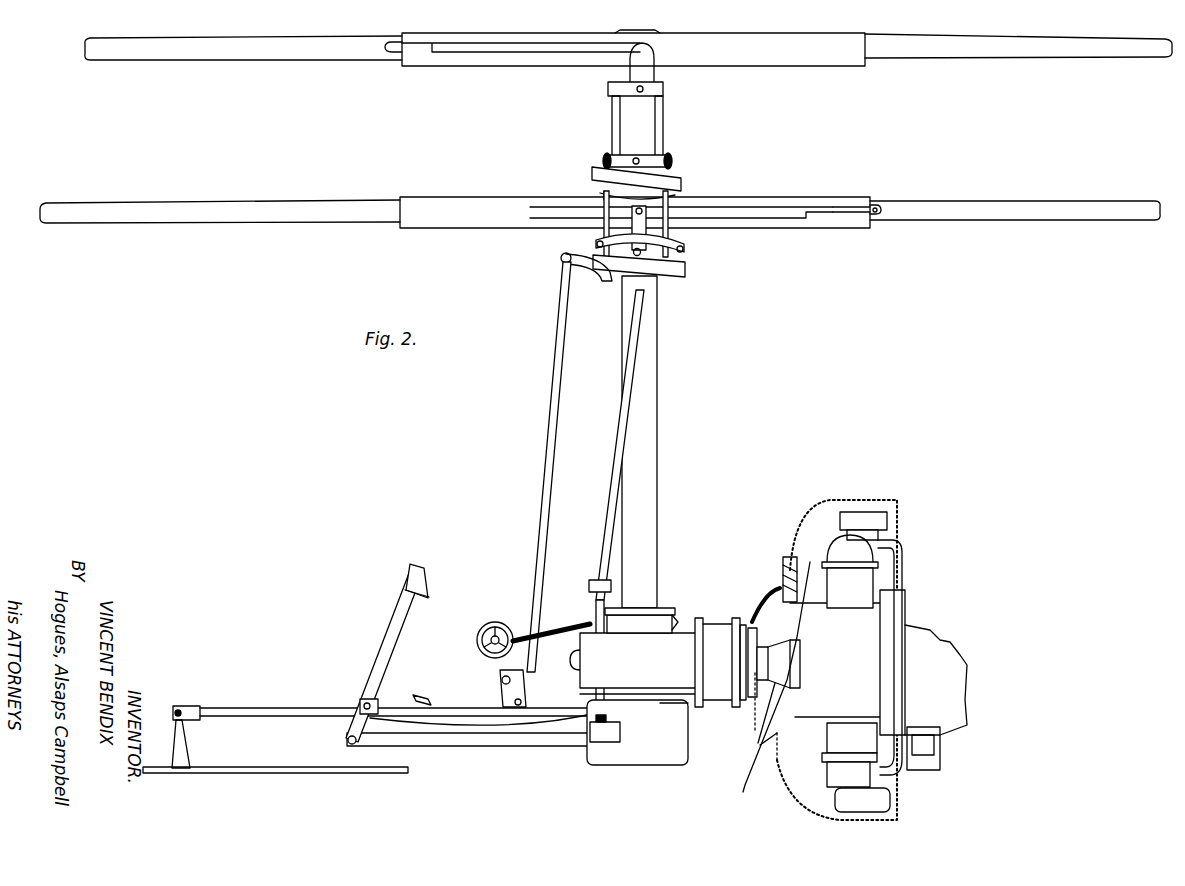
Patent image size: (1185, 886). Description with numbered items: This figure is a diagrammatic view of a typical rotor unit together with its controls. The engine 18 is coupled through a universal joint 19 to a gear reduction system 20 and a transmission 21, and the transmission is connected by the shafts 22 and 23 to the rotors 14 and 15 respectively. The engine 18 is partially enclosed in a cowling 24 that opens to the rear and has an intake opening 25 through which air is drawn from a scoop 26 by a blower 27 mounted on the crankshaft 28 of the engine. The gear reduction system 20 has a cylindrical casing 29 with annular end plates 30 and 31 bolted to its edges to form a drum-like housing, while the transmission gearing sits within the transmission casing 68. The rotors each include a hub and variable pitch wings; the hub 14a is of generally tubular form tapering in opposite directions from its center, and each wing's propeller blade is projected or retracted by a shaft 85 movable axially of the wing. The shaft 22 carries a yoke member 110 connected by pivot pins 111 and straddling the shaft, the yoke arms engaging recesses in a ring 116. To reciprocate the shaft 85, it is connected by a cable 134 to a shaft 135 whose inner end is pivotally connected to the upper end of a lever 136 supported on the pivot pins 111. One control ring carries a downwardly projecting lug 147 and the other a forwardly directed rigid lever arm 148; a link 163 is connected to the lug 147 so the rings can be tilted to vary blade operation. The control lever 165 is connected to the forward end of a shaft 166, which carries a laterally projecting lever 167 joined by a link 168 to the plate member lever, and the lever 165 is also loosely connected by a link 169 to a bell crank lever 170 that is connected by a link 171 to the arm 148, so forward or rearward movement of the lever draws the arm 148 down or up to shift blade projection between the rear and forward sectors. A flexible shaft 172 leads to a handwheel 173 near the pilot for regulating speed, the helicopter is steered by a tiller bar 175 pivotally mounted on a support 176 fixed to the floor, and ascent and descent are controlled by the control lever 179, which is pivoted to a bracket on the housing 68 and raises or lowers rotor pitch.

The rotor 14 is at (1015, 212).
The hub 14a is at (690, 200).
The rotor 15 is at (1078, 45).
The engine 18 is at (865, 632).
The universal joint 19 is at (742, 623).
The gear reduction system 20 is at (722, 622).
The transmission 21 is at (640, 650).
The shaft 22 is at (650, 466).
The shaft 23 is at (645, 128).
The cowling 24 is at (824, 500).
The intake opening 25 is at (762, 700).
The scoop 26 is at (770, 785).
The blower 27 is at (790, 593).
The crankshaft 28 is at (800, 660).
The cylindrical casing 29 is at (720, 700).
The annular end plate 30 is at (742, 710).
The annular end plate 31 is at (684, 700).
The transmission casing 68 is at (674, 628).
The shaft 85 is at (878, 207).
The yoke member 110 is at (605, 242).
The pivot pins 111 is at (668, 242).
The ring 116 is at (675, 273).
The cable 134 is at (848, 208).
The shaft 135 is at (828, 188).
The lever 136 is at (633, 218).
The lug 147 is at (645, 282).
The lever arm 148 is at (583, 282).
The link 163 is at (620, 400).
The control lever 165 is at (390, 630).
The shaft 166 is at (442, 746).
The lever 167 is at (605, 736).
The link 168 is at (600, 670).
The link 169 is at (396, 700).
The bell crank lever 170 is at (501, 685).
The link 171 is at (542, 492).
The flexible shaft 172 is at (576, 610).
The handwheel 173 is at (496, 621).
The tiller bar 175 is at (185, 707).
The support 176 is at (182, 746).
The ascent and descent control lever 179 is at (425, 700).